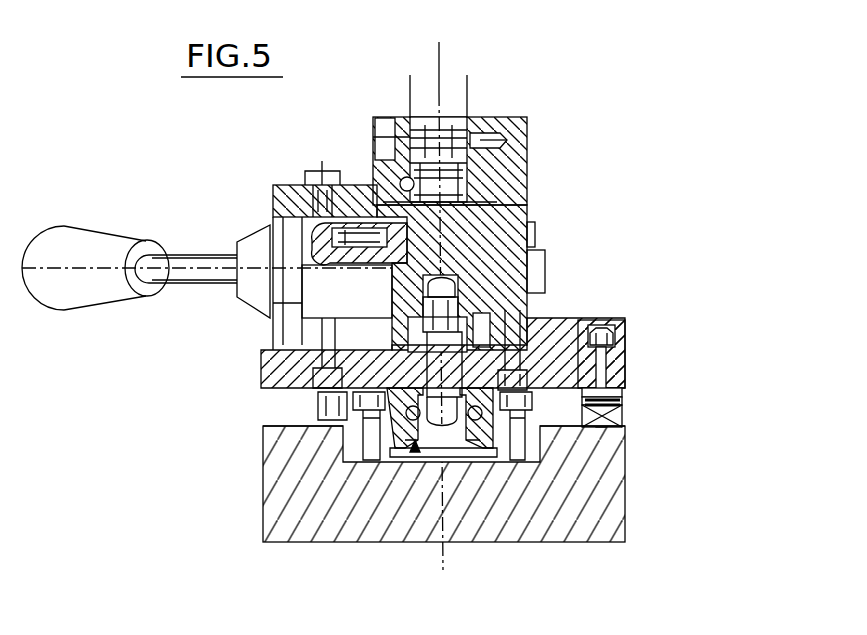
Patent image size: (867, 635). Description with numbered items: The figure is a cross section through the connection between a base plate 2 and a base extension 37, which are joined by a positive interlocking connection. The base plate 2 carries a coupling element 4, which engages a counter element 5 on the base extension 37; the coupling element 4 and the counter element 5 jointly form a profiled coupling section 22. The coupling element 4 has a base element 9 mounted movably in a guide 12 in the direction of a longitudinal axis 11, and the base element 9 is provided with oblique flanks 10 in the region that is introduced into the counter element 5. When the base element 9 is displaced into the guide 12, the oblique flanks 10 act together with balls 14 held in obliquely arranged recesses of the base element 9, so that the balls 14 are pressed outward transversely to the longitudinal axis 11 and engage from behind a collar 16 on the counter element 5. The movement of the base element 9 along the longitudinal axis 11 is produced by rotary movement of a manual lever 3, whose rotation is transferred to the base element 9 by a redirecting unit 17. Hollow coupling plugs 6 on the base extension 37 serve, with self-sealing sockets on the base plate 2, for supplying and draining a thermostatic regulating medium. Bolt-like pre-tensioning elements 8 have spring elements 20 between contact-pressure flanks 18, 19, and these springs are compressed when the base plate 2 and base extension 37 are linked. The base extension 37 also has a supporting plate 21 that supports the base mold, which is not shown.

The base plate 2 is at (625, 352).
The manual lever 3 is at (105, 240).
The coupling element 4 is at (447, 375).
The counter element 5 is at (490, 450).
The coupling plugs 6 is at (318, 411).
The pre-tensioning elements 8 is at (620, 393).
The base element 9 is at (457, 457).
The oblique flanks 10 is at (465, 455).
The longitudinal axis 11 is at (439, 80).
The guide 12 is at (280, 369).
The balls 14 is at (390, 455).
The collar 16 is at (621, 321).
The redirecting unit 17 is at (497, 228).
The contact-pressure flank 18 is at (622, 398).
The contact-pressure flank 19 is at (622, 415).
The spring elements 20 is at (620, 410).
The supporting plate 21 is at (270, 478).
The profiled coupling section 22 is at (413, 462).
The base extension 37 is at (628, 492).